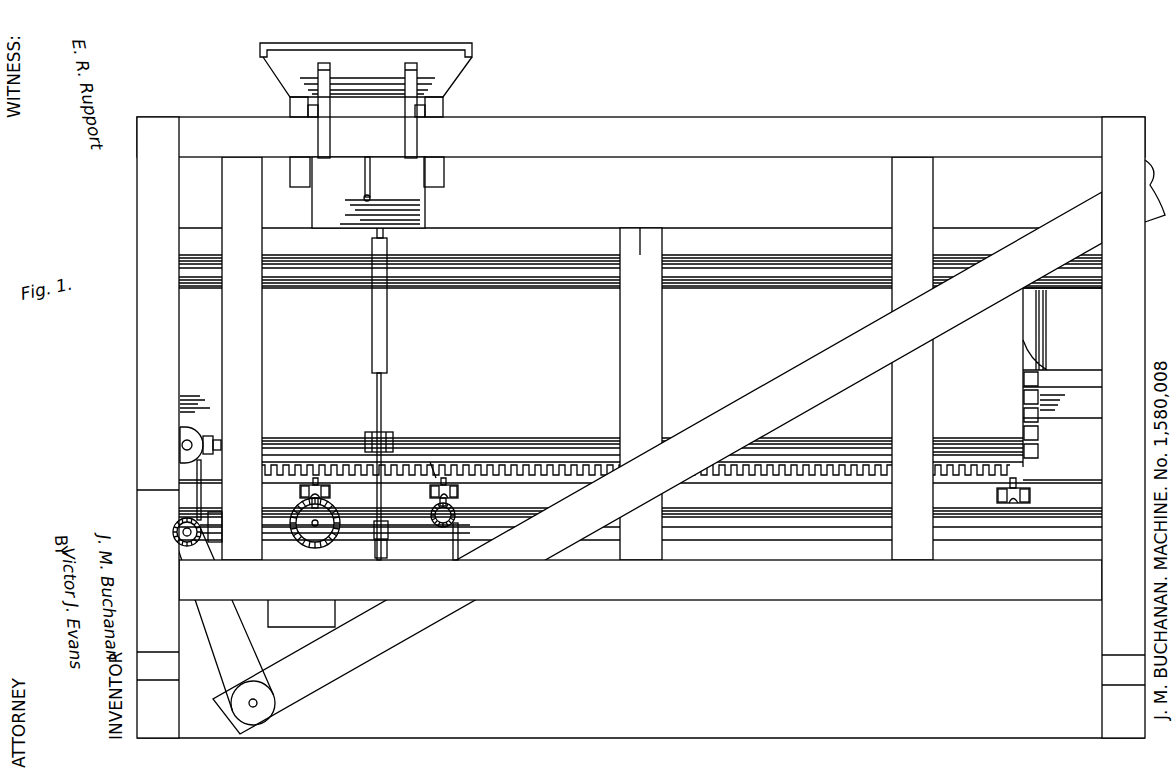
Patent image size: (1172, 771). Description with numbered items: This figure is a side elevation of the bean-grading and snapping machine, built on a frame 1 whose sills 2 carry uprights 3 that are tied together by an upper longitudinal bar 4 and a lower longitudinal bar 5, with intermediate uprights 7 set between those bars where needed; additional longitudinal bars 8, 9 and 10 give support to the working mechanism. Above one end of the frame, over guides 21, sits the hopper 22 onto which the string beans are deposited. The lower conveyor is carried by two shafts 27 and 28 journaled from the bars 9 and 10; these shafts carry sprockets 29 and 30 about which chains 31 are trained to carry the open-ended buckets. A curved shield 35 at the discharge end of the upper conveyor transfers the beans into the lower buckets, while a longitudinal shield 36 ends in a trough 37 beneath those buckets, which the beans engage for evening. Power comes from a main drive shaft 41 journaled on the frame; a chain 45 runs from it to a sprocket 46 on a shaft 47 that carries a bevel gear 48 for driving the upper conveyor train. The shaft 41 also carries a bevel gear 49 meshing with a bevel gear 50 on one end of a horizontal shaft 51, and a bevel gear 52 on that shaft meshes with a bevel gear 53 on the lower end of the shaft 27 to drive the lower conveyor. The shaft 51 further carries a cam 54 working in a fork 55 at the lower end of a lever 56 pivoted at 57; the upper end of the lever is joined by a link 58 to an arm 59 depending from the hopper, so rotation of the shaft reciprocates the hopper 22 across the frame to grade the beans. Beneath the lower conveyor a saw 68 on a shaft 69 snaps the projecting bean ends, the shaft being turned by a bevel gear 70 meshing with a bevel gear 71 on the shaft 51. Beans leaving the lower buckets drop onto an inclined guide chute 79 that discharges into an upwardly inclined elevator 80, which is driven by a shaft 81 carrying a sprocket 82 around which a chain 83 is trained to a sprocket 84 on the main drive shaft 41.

The frame 1 is at (812, 118).
The sills 2 is at (1108, 697).
The uprights 3 is at (1110, 621).
The upper longitudinal bar 4 is at (645, 120).
The lower longitudinal bar 5 is at (770, 594).
The uprights 7 is at (255, 308).
The longitudinally extending bar 8 is at (760, 232).
The longitudinally extending bar 9 is at (1078, 375).
The longitudinally extending bar 10 is at (1085, 487).
The guides 21 is at (290, 103).
The hopper 22 is at (447, 68).
The shaft 27 is at (299, 491).
The shaft 28 is at (1022, 484).
The sprocket 29 is at (297, 467).
The sprocket 30 is at (1040, 428).
The chains 31 is at (553, 465).
The curved shield or guard 35 is at (1050, 303).
The shield or guard 36 is at (903, 377).
The trough 37 is at (838, 455).
The main drive shaft 41 is at (183, 531).
The chain 45 is at (195, 490).
The sprocket 46 is at (213, 437).
The shaft 47 is at (182, 445).
The bevel gear 48 is at (195, 432).
The bevel gear 49 is at (181, 520).
The bevel gear 50 is at (214, 505).
The shaft 51 is at (597, 535).
The bevel gear 52 is at (293, 545).
The bevel gear 53 is at (324, 512).
The cam 54 is at (373, 540).
The fork or yoke 55 is at (388, 553).
The lever 56 is at (387, 380).
The pivot 57 is at (392, 433).
The link 58 is at (383, 193).
The arm 59 is at (363, 185).
The saw 68 is at (435, 470).
The shaft 69 is at (458, 502).
The bevel gear 70 is at (430, 510).
The bevel gear 71 is at (455, 555).
The guide chute 79 is at (323, 612).
The elevator 80 is at (775, 385).
The shaft 81 is at (255, 715).
The sprocket 82 is at (268, 703).
The chain 83 is at (213, 656).
The sprocket 84 is at (200, 548).